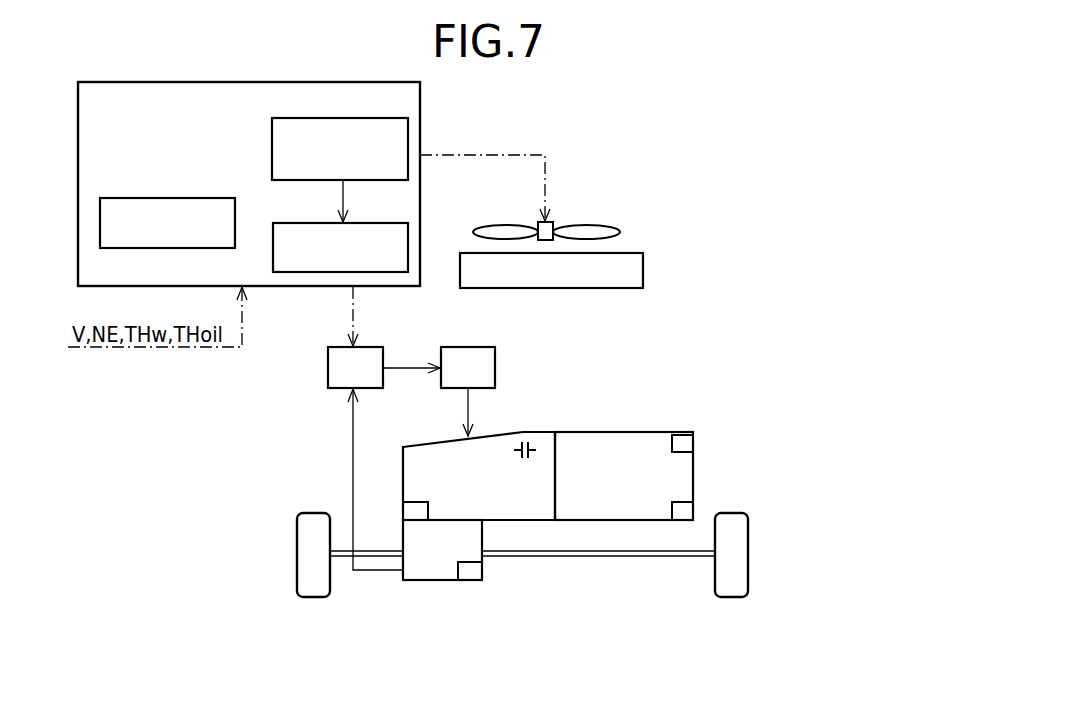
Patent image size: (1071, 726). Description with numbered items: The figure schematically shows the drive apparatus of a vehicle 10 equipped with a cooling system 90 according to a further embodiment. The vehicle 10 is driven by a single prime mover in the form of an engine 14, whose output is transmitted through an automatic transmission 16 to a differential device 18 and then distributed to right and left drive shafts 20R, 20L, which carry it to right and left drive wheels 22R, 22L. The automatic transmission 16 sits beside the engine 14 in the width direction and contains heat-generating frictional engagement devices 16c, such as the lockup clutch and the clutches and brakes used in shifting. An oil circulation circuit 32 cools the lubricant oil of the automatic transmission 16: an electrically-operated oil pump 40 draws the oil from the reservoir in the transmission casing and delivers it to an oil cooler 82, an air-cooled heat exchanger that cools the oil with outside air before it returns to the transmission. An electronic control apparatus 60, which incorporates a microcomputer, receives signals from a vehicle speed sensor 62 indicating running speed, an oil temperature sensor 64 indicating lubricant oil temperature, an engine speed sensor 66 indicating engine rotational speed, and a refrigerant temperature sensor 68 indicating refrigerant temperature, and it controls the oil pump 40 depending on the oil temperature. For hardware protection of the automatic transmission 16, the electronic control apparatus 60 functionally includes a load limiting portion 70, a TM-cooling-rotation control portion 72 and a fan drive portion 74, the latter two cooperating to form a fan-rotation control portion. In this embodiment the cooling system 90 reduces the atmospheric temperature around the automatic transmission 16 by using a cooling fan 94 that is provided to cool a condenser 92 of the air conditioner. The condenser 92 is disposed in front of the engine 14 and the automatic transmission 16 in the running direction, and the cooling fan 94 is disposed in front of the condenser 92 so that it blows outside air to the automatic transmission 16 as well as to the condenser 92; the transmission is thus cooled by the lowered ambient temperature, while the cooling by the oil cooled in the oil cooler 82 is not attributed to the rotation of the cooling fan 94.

The vehicle 10 is at (378, 610).
The engine 14 is at (607, 443).
The automatic transmission 16 is at (455, 447).
The frictional engagement devices 16c is at (533, 437).
The differential device 18 is at (427, 573).
The left drive shaft 20L is at (376, 551).
The right drive shaft 20R is at (602, 557).
The left drive wheel 22L is at (303, 528).
The right drive wheel 22R is at (740, 533).
The oil circulation circuit 32 is at (304, 369).
The electrically-operated oil pump 40 is at (365, 350).
The electronic control apparatus 60 is at (323, 88).
The vehicle speed sensor 62 is at (406, 510).
The oil temperature sensor 64 is at (470, 570).
The engine speed sensor 66 is at (683, 505).
The refrigerant temperature sensor 68 is at (682, 436).
The load limiting portion 70 is at (183, 205).
The TM-cooling-rotation control portion 72 is at (355, 125).
The fan drive portion 74 is at (357, 230).
The oil cooler 82 is at (475, 349).
The cooling system 90 is at (642, 125).
The condenser 92 is at (607, 284).
The cooling fan 94 is at (590, 233).